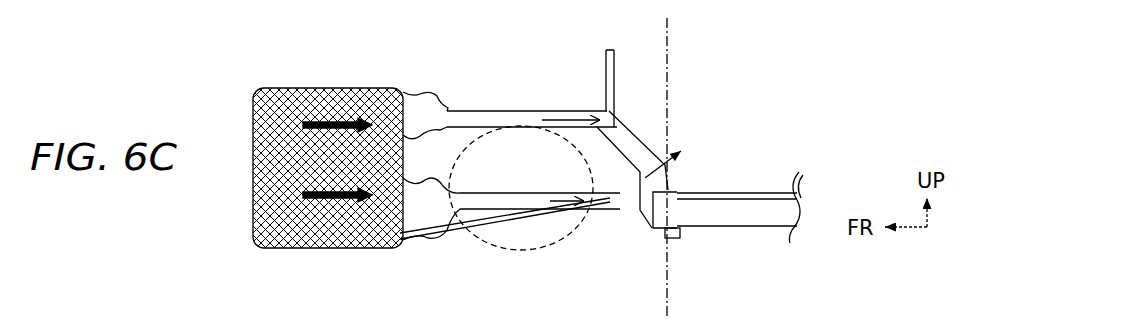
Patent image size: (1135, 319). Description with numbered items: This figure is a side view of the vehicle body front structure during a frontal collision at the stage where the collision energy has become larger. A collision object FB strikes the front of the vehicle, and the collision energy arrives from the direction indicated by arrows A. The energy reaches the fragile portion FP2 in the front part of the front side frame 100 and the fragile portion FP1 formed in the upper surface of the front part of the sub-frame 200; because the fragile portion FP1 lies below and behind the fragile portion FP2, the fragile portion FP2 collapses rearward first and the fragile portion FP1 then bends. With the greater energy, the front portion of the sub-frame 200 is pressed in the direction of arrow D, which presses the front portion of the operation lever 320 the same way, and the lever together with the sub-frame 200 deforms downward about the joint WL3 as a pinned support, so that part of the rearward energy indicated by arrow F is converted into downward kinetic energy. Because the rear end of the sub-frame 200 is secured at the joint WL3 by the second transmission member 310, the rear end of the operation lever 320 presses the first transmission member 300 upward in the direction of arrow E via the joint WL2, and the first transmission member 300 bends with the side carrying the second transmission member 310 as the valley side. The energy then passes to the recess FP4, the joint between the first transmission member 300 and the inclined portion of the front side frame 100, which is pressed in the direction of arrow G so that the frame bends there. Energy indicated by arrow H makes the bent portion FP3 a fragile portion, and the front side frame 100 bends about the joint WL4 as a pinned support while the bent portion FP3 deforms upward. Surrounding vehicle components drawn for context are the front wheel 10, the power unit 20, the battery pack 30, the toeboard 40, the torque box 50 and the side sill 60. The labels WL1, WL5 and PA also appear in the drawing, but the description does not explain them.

The collision object FB is at (270, 80).
The arrows A is at (327, 122).
The power unit 20 is at (466, 148).
The sub-frame 200 is at (438, 197).
The front side frame 100 is at (474, 111).
The front wheels 10 is at (505, 110).
The arrow H is at (578, 126).
The first transmission member 300 is at (588, 170).
The arrow E is at (592, 197).
The toeboard 40 is at (597, 100).
The fragile portion FP2 is at (413, 82).
The bent portion FP3 is at (593, 103).
The recess FP4 is at (636, 150).
The fragile portion FP1 is at (447, 222).
The pivot axis PA is at (671, 33).
The arrow G is at (670, 150).
The torque box 50 is at (679, 193).
The second transmission member 310 is at (657, 240).
The battery pack 30 is at (796, 178).
The side sills 60 is at (760, 218).
The first wall WL1 is at (414, 258).
The arrow D is at (443, 253).
The joint WL2 is at (596, 230).
The joint WL3 is at (626, 229).
The joint WL4 is at (686, 172).
The fifth wall WL5 is at (690, 240).
The operation lever 320 is at (512, 222).
The arrow F is at (562, 236).